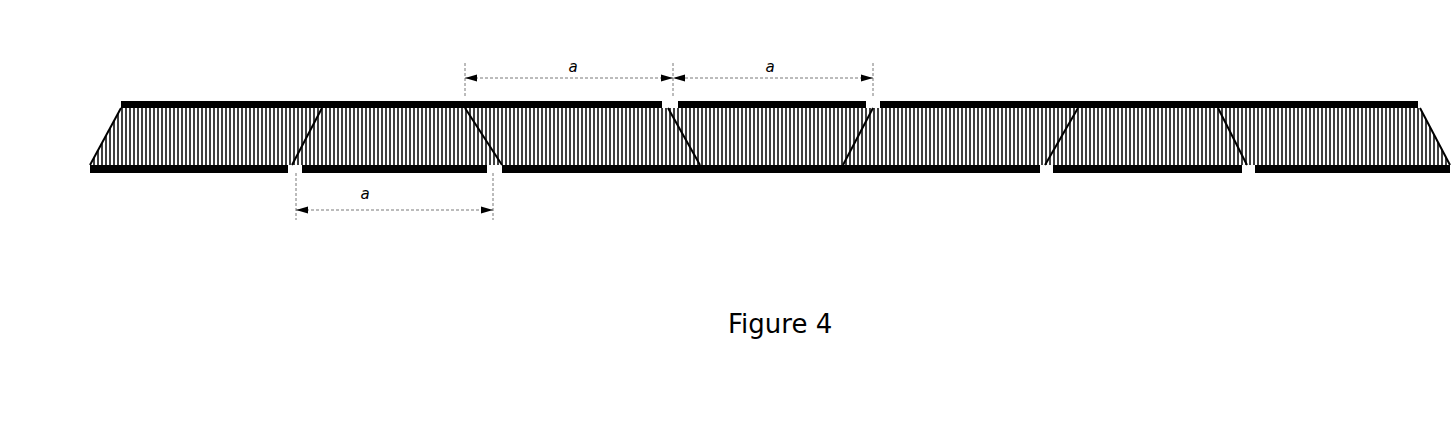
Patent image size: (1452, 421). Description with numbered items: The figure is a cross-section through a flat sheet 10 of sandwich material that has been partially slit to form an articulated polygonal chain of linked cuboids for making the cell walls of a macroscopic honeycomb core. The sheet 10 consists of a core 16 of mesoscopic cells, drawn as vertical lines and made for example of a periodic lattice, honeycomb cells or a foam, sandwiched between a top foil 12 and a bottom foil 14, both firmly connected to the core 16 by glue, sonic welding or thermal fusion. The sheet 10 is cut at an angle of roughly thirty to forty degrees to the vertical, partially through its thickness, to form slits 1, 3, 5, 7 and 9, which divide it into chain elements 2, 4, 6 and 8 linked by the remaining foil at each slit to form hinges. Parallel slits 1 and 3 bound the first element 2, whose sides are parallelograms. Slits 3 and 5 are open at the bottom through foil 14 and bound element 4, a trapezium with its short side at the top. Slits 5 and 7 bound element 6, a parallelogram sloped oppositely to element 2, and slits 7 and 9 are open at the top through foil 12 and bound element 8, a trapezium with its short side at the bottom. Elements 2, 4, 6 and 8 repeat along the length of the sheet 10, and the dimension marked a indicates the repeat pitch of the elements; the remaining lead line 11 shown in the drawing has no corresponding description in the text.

The slit 1 is at (105, 132).
The first cuboid chain element 2 is at (233, 135).
The slit 3 is at (303, 132).
The chain element 4 is at (393, 135).
The slit 5 is at (493, 148).
The chain element 6 is at (592, 147).
The slit 7 is at (686, 152).
The chain element 8 is at (764, 135).
The slit 9 is at (855, 147).
The sheet 10 is at (702, 254).
The lower cover layer 11 is at (952, 147).
The foil 12 is at (1117, 110).
The foil 14 is at (1182, 173).
The core 16 is at (997, 145).